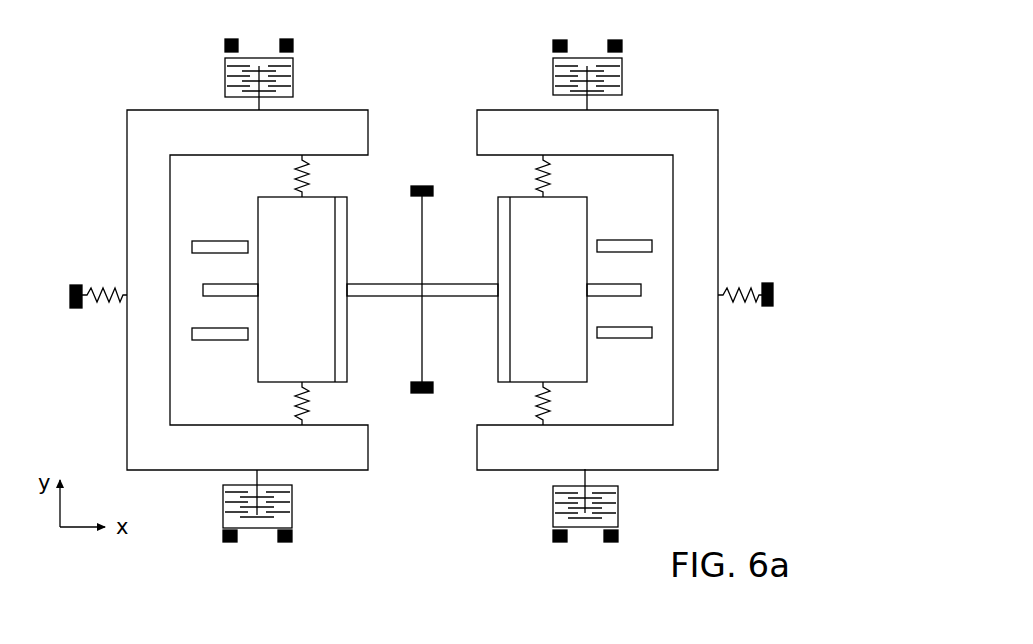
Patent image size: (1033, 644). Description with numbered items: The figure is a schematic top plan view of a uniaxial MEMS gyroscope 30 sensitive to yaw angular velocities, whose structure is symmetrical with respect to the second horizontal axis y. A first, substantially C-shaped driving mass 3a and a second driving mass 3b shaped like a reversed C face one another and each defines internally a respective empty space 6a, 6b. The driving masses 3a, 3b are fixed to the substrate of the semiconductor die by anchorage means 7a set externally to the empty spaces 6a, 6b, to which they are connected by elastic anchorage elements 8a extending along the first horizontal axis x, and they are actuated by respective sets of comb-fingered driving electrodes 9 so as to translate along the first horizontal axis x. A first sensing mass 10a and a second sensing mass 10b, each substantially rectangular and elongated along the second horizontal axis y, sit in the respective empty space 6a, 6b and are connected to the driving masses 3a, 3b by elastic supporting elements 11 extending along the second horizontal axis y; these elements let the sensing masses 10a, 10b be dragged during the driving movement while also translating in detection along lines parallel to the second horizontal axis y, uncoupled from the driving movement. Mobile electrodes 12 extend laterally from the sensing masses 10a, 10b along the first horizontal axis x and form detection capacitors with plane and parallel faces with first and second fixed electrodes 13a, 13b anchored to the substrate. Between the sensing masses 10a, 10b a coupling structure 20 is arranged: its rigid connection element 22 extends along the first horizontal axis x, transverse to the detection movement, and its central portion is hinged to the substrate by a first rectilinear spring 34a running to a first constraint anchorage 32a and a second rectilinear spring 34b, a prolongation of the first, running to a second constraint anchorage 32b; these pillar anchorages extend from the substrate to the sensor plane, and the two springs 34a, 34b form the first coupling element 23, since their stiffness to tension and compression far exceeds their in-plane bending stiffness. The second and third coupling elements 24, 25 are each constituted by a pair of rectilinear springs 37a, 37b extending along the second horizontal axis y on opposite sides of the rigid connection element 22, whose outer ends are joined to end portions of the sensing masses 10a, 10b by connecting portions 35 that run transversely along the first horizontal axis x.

The first driving mass 3a is at (138, 137).
The second driving mass 3b is at (683, 130).
The MEMS gyroscope 30 is at (777, 133).
The empty space 6a is at (180, 199).
The empty space 6b is at (666, 190).
The anchorage means 7a is at (68, 296).
The elastic anchorage elements 8a is at (105, 302).
The driving electrodes 9 is at (313, 71).
The first sensing mass 10a is at (276, 376).
The second sensing mass 10b is at (572, 213).
The elastic supporting elements 11 is at (306, 170).
The mobile electrodes 12 is at (238, 291).
The first fixed electrodes 13a is at (232, 245).
The second fixed electrodes 13b is at (197, 339).
The coupling structure 20 is at (420, 172).
The rigid connection element 22 is at (440, 297).
The first coupling element 23 is at (433, 230).
The second coupling element 24 is at (357, 225).
The third coupling element 25 is at (484, 377).
The first constraint anchorage 32a is at (436, 188).
The second constraint anchorage 32b is at (425, 394).
The first rectilinear spring 34a is at (422, 245).
The second rectilinear spring 34b is at (422, 322).
The connecting portions 35 is at (507, 198).
The rectilinear spring 37a is at (348, 233).
The rectilinear spring 37b is at (348, 310).